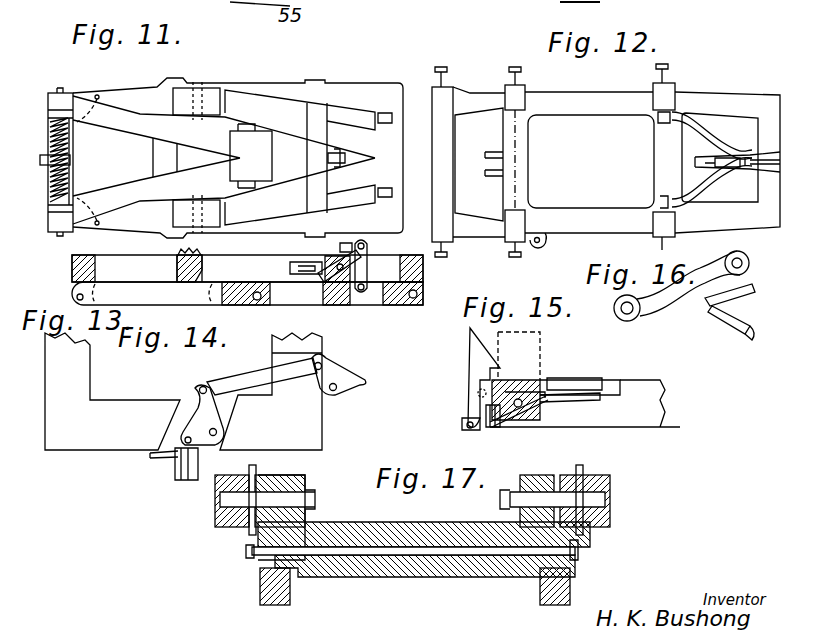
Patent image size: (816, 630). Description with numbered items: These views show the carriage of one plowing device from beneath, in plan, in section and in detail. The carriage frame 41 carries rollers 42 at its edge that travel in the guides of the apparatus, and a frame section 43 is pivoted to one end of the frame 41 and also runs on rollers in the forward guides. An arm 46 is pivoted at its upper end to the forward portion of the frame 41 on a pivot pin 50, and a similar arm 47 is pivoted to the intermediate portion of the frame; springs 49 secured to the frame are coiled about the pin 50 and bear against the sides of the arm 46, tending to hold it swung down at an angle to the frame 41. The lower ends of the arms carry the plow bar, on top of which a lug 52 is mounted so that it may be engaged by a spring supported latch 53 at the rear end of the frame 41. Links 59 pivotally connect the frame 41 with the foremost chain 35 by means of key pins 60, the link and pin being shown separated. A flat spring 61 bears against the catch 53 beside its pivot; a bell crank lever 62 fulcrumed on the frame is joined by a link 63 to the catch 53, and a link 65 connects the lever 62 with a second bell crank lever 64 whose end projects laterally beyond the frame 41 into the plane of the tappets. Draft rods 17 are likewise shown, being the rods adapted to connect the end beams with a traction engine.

In FIG. 12, the draft rods 17 is at (515, 67).
In FIG. 12, the foremost chain 35 is at (768, 140).
In FIG. 12, the carriage frame 41 is at (612, 125).
In FIG. 13, the carriage frame 41 is at (72, 265).
In FIG. 14, the carriage frame 41 is at (72, 410).
In FIG. 15, the carriage frame 41 is at (645, 420).
In FIG. 17, the carriage frame 41 is at (265, 518).
In FIG. 17, the rollers 42 is at (225, 527).
In FIG. 11, the frame section 43 is at (362, 92).
In FIG. 12, the frame section 43 is at (467, 100).
In FIG. 17, the frame section 43 is at (291, 605).
In FIG. 11, the arm 46 is at (110, 113).
In FIG. 13, the arm 46 is at (130, 296).
In FIG. 11, the arm 47 is at (303, 122).
In FIG. 13, the arm 47 is at (306, 294).
In FIG. 11, the springs 49 is at (84, 160).
In FIG. 11, the pivot pin 50 is at (58, 92).
In FIG. 17, the pivot pin 50 is at (580, 552).
In FIG. 13, the lug 52 is at (340, 294).
In FIG. 15, the lug 52 is at (530, 354).
In FIG. 13, the latch 53 is at (368, 290).
In FIG. 15, the latch 53 is at (466, 386).
In FIG. 12, the links 59 is at (707, 148).
In FIG. 16, the links 59 is at (660, 306).
In FIG. 12, the key pins 60 is at (732, 171).
In FIG. 16, the key pins 60 is at (728, 326).
In FIG. 14, the flat spring 61 is at (152, 456).
In FIG. 15, the flat spring 61 is at (466, 429).
In FIG. 13, the bell crank lever 62 is at (337, 263).
In FIG. 14, the bell crank lever 62 is at (198, 410).
In FIG. 15, the bell crank lever 62 is at (520, 421).
In FIG. 13, the link 63 is at (368, 240).
In FIG. 14, the link 63 is at (176, 470).
In FIG. 15, the link 63 is at (492, 428).
In FIG. 14, the bell crank lever 64 is at (344, 396).
In FIG. 15, the bell crank lever 64 is at (568, 388).
In FIG. 13, the link 65 is at (308, 266).
In FIG. 14, the link 65 is at (245, 378).
In FIG. 15, the link 65 is at (580, 406).